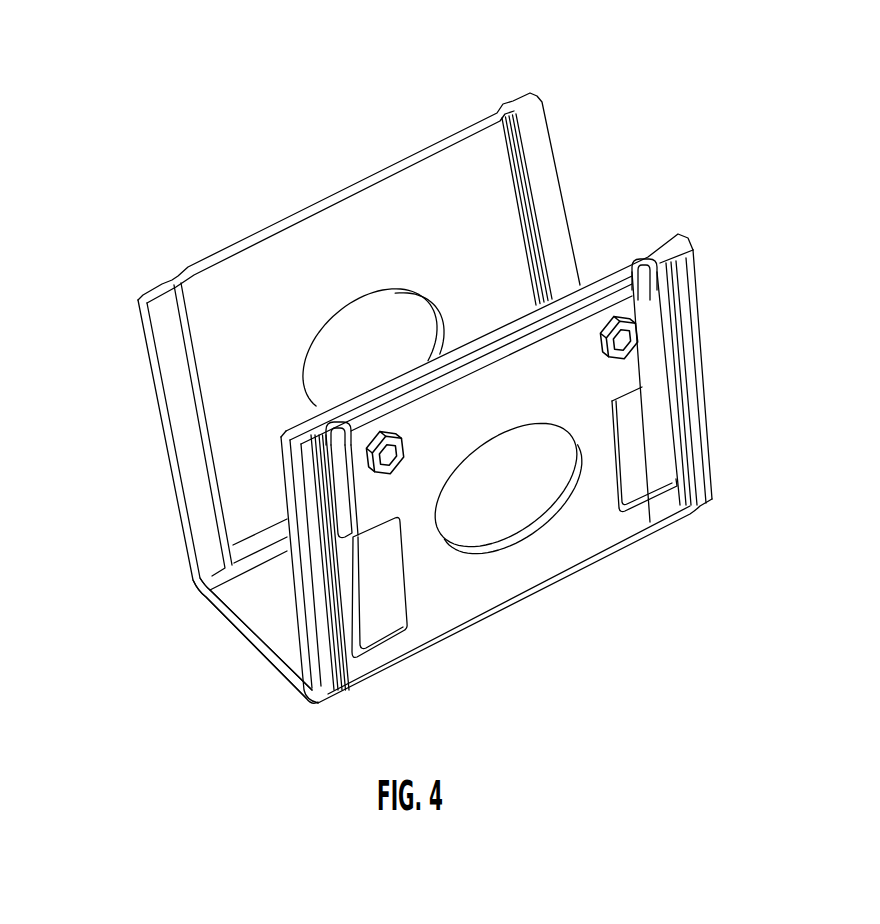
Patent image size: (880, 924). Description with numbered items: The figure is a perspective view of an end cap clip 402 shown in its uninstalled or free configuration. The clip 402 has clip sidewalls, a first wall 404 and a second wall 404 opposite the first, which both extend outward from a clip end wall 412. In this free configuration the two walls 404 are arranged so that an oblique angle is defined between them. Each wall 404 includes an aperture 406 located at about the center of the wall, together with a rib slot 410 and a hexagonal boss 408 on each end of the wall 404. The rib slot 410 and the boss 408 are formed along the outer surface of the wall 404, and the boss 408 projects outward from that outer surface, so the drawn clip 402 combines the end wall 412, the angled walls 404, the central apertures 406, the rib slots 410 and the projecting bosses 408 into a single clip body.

The clip 402 is at (413, 374).
The wall 404 is at (425, 200).
The aperture 406 is at (547, 518).
The hexagonal boss 408 is at (393, 463).
The rib slot 410 is at (657, 358).
The clip end wall 412 is at (248, 641).